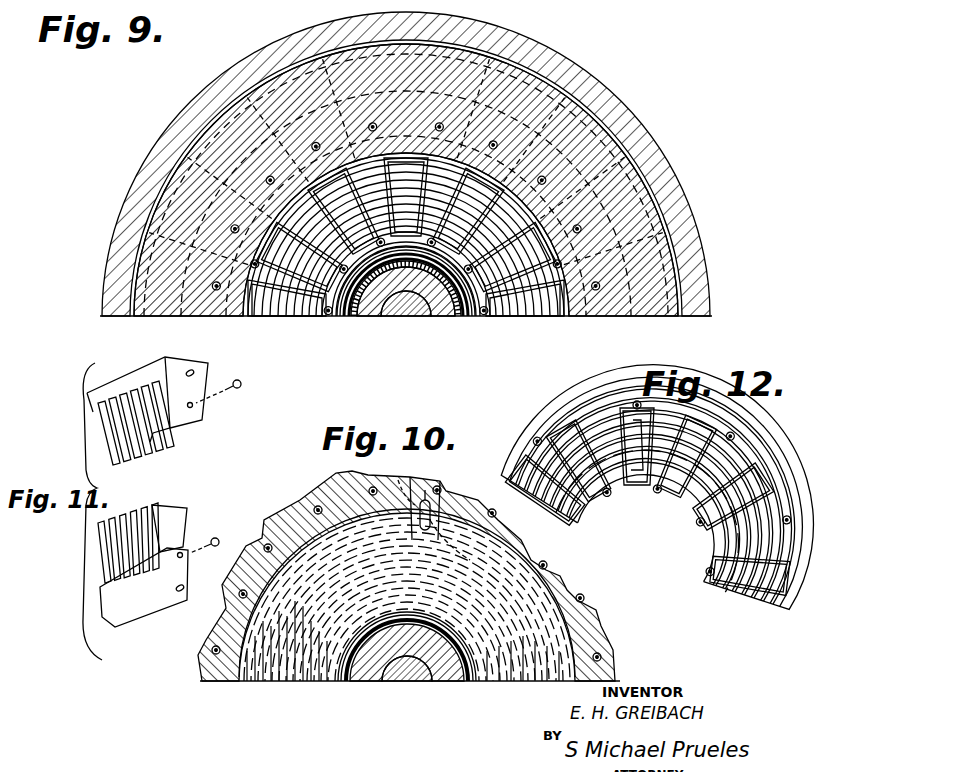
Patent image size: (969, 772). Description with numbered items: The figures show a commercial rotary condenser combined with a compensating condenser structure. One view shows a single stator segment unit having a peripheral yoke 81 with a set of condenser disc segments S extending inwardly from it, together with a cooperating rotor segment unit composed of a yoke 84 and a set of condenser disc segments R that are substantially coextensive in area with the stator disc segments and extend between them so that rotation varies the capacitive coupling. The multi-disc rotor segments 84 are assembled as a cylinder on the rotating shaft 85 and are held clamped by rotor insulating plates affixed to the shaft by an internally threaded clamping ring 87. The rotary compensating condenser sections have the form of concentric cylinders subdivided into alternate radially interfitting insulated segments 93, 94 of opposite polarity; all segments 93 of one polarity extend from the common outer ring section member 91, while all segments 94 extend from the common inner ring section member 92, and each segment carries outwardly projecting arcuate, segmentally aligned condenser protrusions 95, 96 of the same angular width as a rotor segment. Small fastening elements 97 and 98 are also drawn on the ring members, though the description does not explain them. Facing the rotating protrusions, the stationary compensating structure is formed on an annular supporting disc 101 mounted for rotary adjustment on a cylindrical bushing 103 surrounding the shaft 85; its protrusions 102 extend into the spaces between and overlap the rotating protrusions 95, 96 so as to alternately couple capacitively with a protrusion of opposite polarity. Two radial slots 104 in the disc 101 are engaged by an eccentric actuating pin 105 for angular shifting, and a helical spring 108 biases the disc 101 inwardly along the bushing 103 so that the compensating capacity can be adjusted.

In FIG. 11, the peripheral yoke 81 is at (125, 380).
In FIG. 11, the rotor yoke 84 is at (137, 600).
In FIG. 9, the rotating shaft 85 is at (411, 317).
In FIG. 10, the rotating shaft 85 is at (420, 681).
In FIG. 9, the internally threaded clamping ring 87 is at (445, 318).
In FIG. 10, the internally threaded clamping ring 87 is at (370, 683).
In FIG. 9, the outer ring section member 91 is at (533, 58).
In FIG. 12, the outer ring section member 91 is at (598, 408).
In FIG. 9, the inner ring section member 92 is at (376, 318).
In FIG. 12, the inner ring section member 92 is at (708, 568).
In FIG. 9, the compensating condenser segment 93 is at (279, 318).
In FIG. 12, the compensating condenser segment 93 is at (625, 432).
In FIG. 9, the compensating condenser segment 94 is at (580, 86).
In FIG. 12, the compensating condenser segment 94 is at (668, 467).
In FIG. 9, the arcuate condenser protrusion 95 is at (541, 318).
In FIG. 10, the arcuate condenser protrusion 95 is at (447, 535).
In FIG. 12, the arcuate condenser protrusion 95 is at (583, 432).
In FIG. 9, the arcuate condenser protrusion 96 is at (300, 318).
In FIG. 10, the arcuate condenser protrusion 96 is at (524, 538).
In FIG. 12, the arcuate condenser protrusion 96 is at (635, 472).
In FIG. 12, the mounting bolt 97 is at (535, 436).
In FIG. 12, the inner bolt 98 is at (607, 494).
In FIG. 10, the annular supporting disc 101 is at (251, 683).
In FIG. 10, the stationary condenser protrusions 102 is at (262, 627).
In FIG. 9, the cylindrical bushing 103 is at (464, 318).
In FIG. 10, the cylindrical bushing 103 is at (466, 684).
In FIG. 10, the radial slot 104 is at (448, 546).
In FIG. 10, the actuating pin 105 is at (404, 484).
In FIG. 9, the helical spring 108 is at (338, 314).
In FIG. 10, the helical spring 108 is at (350, 681).
In FIG. 11, the condenser disc segments S is at (168, 437).
In FIG. 11, the condenser disc segments R is at (170, 512).